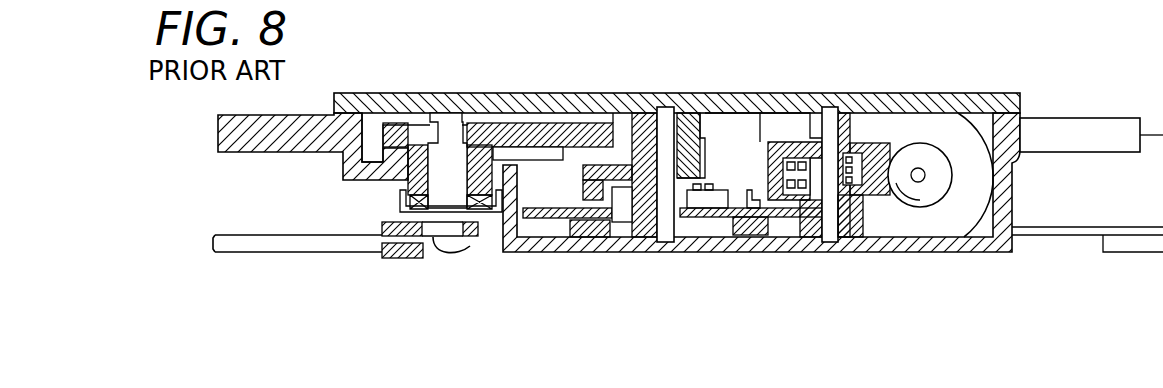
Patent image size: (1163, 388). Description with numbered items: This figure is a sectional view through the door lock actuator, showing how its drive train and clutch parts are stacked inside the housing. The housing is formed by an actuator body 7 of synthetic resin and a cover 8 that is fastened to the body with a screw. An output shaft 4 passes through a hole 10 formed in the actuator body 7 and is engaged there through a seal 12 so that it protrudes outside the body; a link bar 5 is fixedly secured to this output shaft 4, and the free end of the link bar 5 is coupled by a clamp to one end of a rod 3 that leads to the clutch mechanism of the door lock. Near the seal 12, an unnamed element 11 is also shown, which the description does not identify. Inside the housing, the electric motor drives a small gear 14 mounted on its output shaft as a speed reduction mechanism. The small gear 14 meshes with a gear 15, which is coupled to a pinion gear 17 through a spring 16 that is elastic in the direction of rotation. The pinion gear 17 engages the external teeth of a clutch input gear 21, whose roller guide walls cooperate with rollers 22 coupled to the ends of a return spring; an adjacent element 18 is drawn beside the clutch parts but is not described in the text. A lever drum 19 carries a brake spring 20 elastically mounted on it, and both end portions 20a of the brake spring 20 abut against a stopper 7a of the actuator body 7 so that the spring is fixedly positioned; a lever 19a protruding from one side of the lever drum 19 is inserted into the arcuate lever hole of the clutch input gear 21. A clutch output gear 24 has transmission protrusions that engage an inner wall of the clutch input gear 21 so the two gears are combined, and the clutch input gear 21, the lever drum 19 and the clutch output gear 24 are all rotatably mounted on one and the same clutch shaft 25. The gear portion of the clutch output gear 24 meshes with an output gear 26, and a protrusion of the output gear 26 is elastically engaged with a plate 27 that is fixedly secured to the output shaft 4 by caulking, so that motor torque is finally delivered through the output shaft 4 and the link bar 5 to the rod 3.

The rod 3 is at (254, 243).
The output shaft 4 is at (440, 170).
The link bar 5 is at (434, 240).
The actuator body 7 is at (1073, 125).
The stopper 7a is at (576, 250).
The cover 8 is at (1003, 100).
The hole 10 is at (472, 243).
The plate 11 is at (510, 248).
The seal 12 is at (400, 250).
The small gear 14 is at (920, 155).
The gear 15 is at (889, 126).
The spring 16 is at (870, 253).
The pinion gear 17 is at (822, 250).
The plate 18 is at (828, 108).
The lever drum 19 is at (717, 252).
The lever 19a is at (645, 250).
The brake spring 20 is at (750, 250).
The end portions 20a is at (603, 255).
The clutch input gear 21 is at (790, 253).
The rollers 22 is at (755, 120).
The clutch output gear 24 is at (694, 118).
The clutch shaft 25 is at (662, 118).
The output gear 26 is at (578, 128).
The plate 27 is at (478, 125).